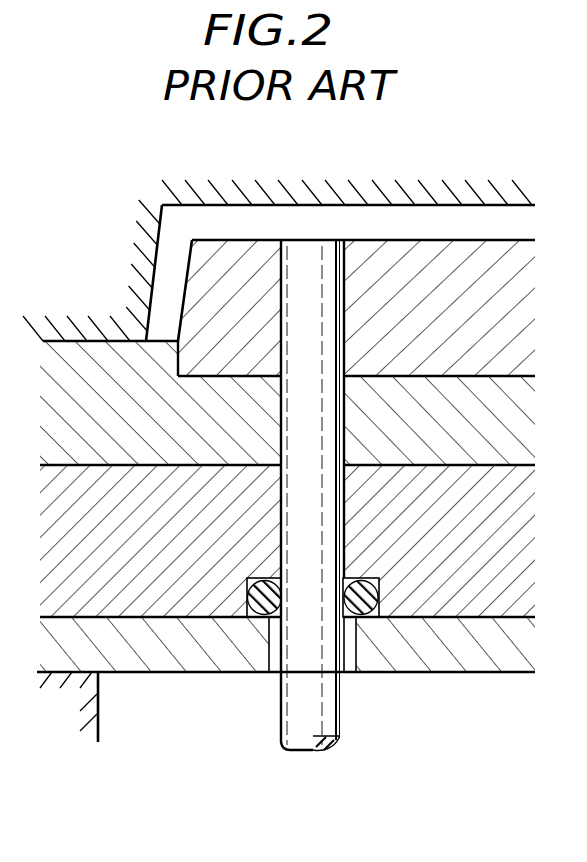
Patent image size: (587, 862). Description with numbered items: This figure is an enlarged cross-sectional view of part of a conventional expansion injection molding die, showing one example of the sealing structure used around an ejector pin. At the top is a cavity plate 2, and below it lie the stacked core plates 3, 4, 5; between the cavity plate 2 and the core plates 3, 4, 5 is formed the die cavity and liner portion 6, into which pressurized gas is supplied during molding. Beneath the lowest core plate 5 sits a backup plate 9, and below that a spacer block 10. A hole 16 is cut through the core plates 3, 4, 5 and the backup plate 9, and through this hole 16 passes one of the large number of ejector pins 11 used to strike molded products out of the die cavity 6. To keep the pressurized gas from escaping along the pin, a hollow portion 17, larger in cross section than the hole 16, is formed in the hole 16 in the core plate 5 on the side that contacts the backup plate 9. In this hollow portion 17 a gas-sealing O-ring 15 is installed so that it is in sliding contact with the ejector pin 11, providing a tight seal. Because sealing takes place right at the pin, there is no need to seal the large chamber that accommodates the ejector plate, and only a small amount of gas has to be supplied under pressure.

The cavity plate 2 is at (329, 155).
The core plate 3 is at (479, 319).
The core plate 4 is at (479, 435).
The core plate 5 is at (479, 550).
The die cavity and liner portion 6 is at (409, 222).
The backup plate 9 is at (478, 661).
The spacer block 10 is at (100, 712).
The ejector pin 11 is at (330, 709).
The gas-sealing O-ring 15 is at (251, 577).
The hole 16 is at (277, 665).
The hollow portion 17 is at (253, 620).